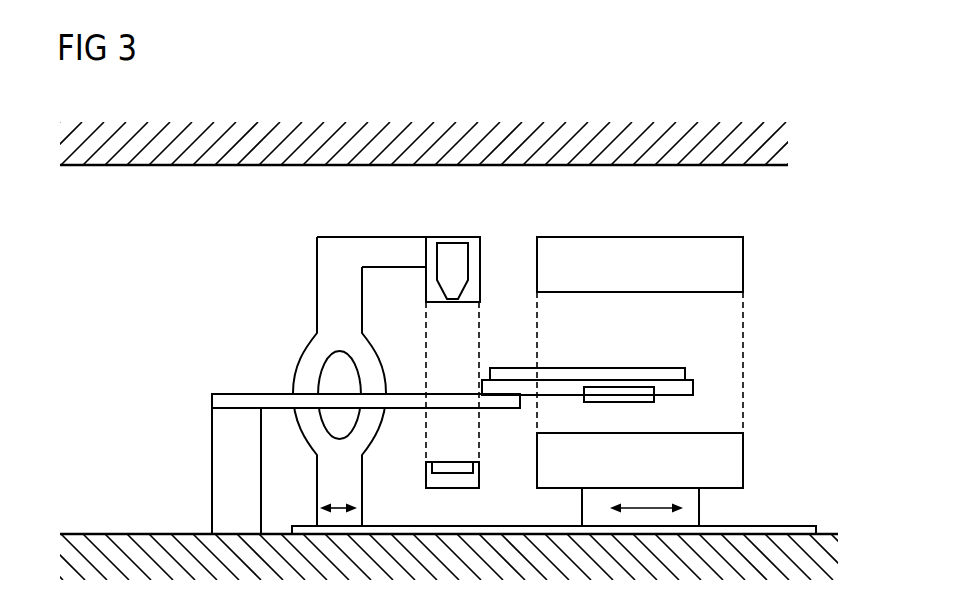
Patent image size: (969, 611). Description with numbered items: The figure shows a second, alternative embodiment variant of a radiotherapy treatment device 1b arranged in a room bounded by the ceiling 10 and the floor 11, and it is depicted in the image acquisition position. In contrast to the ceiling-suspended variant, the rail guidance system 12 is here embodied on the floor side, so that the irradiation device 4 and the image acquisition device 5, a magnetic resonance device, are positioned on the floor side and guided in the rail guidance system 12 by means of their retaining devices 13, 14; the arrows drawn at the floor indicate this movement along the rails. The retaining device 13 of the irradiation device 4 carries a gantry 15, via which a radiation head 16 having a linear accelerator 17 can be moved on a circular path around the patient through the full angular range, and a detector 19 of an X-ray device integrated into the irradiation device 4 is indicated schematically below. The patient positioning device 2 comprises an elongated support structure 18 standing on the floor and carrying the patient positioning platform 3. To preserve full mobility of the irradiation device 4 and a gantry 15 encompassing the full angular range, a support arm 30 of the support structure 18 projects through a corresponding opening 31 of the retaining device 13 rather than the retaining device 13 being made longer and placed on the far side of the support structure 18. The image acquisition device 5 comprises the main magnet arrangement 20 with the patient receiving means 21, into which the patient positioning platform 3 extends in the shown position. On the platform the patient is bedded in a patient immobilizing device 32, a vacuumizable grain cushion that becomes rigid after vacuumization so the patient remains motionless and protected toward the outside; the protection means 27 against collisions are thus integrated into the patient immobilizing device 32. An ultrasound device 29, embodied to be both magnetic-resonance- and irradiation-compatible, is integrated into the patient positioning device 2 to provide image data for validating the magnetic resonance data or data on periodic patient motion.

The radiotherapy treatment device 1b is at (210, 308).
The patient positioning device 2 is at (185, 404).
The patient positioning platform 3 is at (693, 387).
The irradiation device 4 is at (306, 266).
The image acquisition device 5 is at (762, 220).
The ceiling 10 is at (288, 128).
The floor 11 is at (95, 545).
The rail guidance system 12 is at (773, 530).
The retaining device 13 is at (380, 244).
The retaining device 14 is at (583, 509).
The gantry 15 is at (480, 342).
The radiation head 16 is at (472, 267).
The linear accelerator 17 is at (455, 243).
The support structure 18 is at (212, 488).
The detector 19 is at (432, 467).
The main magnet arrangement 20 is at (743, 268).
The patient receiving means 21 is at (732, 360).
The protection means 27 is at (672, 352).
The ultrasound device 29 is at (630, 392).
The support arm 30 is at (238, 404).
The opening 31 is at (330, 379).
The patient immobilizing device 32 is at (578, 368).